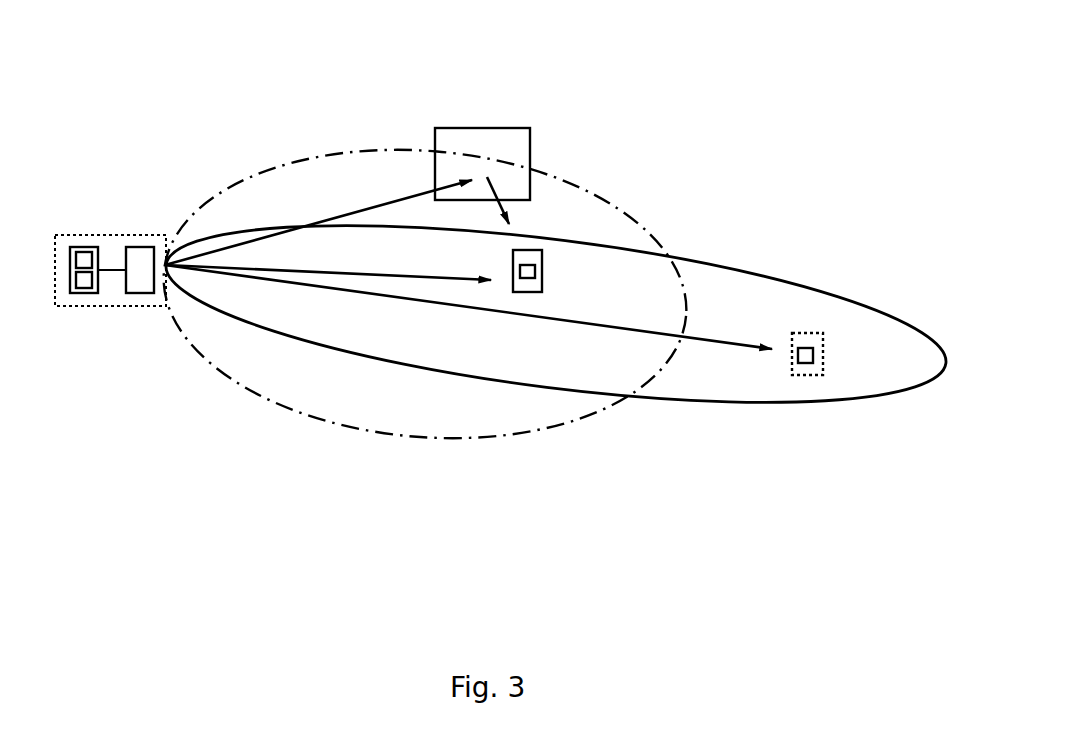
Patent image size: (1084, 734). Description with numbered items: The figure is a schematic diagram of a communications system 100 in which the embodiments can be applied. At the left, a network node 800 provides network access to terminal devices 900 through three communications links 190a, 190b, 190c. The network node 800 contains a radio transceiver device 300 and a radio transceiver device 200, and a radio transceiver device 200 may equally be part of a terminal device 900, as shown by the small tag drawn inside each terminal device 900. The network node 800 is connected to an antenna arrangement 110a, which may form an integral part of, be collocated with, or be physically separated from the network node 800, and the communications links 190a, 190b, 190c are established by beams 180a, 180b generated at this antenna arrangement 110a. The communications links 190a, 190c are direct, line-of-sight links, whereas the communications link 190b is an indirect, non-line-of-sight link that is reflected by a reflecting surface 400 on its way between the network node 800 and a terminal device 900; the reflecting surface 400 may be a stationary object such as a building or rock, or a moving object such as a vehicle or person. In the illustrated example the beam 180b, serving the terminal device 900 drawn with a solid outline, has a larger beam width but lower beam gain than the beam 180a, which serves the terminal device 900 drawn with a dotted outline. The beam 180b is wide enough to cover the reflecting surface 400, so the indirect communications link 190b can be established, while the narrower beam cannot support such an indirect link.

The communications system 100 is at (740, 66).
The antenna arrangement 110a is at (135, 247).
The beam 180a is at (890, 394).
The beam 180b is at (463, 439).
The communications link 190a is at (400, 272).
The communications link 190b is at (373, 208).
The communications link 190c is at (697, 340).
The radio transceiver device 200 is at (90, 293).
The radio transceiver device 300 is at (78, 253).
The reflecting surface 400 is at (485, 128).
The network node 800 is at (75, 263).
The terminal device 900 is at (530, 292).